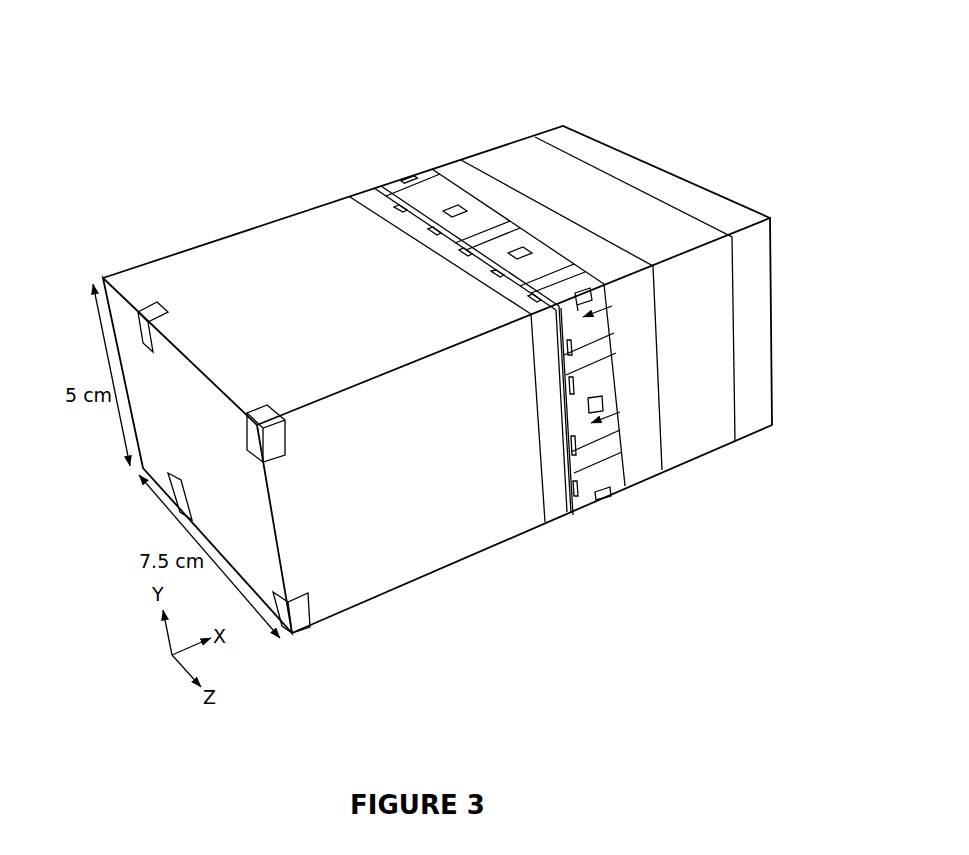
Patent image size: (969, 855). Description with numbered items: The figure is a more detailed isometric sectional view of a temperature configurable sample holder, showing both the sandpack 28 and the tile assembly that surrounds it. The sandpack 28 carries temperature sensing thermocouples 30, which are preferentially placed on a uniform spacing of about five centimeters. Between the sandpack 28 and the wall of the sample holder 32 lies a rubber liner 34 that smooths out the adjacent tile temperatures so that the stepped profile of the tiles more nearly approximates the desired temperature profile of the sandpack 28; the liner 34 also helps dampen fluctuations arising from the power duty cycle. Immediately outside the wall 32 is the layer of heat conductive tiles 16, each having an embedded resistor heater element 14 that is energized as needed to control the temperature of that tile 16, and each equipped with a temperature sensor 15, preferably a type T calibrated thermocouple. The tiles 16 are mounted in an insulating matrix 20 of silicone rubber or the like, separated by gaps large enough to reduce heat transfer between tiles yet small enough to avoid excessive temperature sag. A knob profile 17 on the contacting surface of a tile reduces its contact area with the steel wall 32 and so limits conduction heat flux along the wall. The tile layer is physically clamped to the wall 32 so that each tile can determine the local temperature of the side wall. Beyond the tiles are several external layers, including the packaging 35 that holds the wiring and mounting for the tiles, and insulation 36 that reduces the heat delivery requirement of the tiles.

The heater element 14 is at (405, 175).
The temperature sensor 15 is at (614, 422).
The heat conductive tile 16 is at (428, 175).
The knob profile 17 is at (438, 211).
The insulating matrix 20 is at (406, 196).
The sandpack 28 is at (351, 533).
The temperature sensing thermocouple 30 is at (248, 440).
The wall of the sample holder 32 is at (581, 504).
The rubber liner 34 is at (557, 505).
The packaging 35 is at (642, 464).
The insulation 36 is at (754, 267).